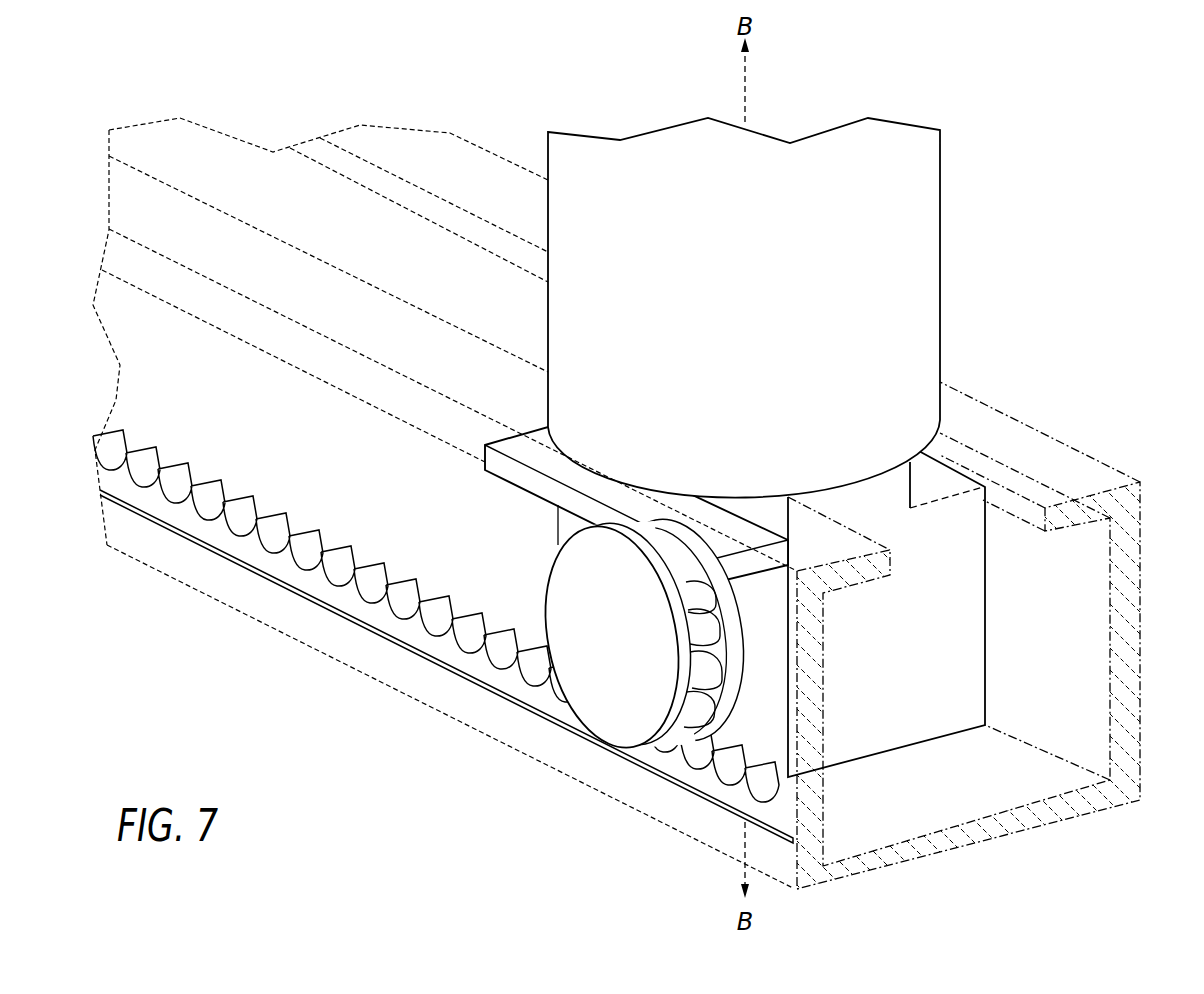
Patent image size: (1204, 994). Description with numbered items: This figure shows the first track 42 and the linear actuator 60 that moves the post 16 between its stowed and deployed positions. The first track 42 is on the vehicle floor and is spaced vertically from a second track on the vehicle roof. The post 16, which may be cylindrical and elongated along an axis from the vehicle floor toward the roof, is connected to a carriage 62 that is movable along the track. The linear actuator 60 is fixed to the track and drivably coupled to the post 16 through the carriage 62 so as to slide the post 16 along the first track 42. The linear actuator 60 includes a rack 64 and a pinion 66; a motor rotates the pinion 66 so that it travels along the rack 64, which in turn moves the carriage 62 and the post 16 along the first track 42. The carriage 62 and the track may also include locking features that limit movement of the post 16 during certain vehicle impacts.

The post 16 is at (920, 238).
The first track 42 is at (1071, 477).
The linear actuator 60 is at (489, 596).
The carriage 62 is at (942, 609).
The rack 64 is at (415, 622).
The pinion 66 is at (627, 693).